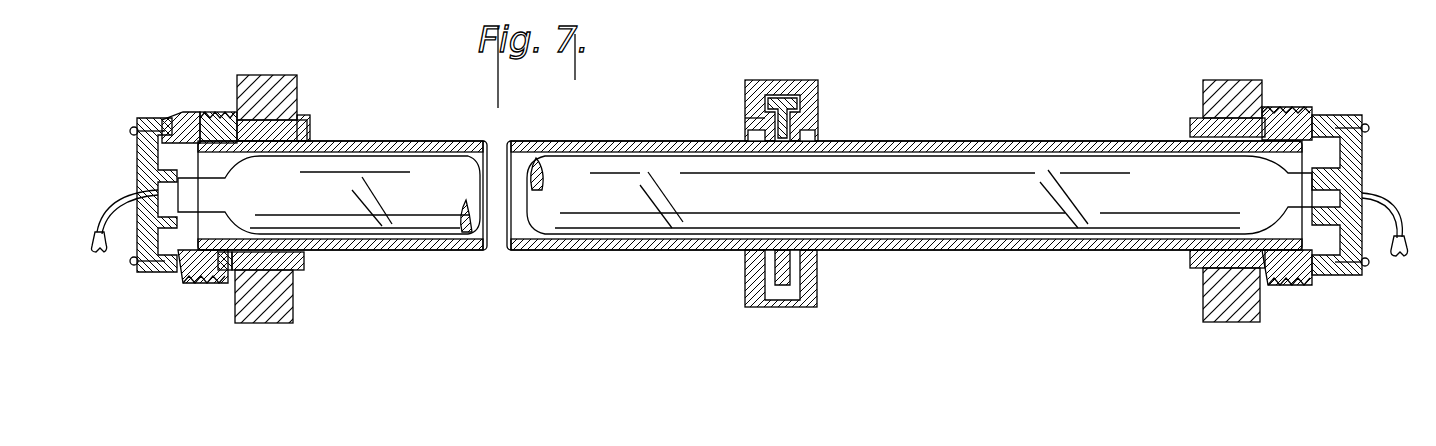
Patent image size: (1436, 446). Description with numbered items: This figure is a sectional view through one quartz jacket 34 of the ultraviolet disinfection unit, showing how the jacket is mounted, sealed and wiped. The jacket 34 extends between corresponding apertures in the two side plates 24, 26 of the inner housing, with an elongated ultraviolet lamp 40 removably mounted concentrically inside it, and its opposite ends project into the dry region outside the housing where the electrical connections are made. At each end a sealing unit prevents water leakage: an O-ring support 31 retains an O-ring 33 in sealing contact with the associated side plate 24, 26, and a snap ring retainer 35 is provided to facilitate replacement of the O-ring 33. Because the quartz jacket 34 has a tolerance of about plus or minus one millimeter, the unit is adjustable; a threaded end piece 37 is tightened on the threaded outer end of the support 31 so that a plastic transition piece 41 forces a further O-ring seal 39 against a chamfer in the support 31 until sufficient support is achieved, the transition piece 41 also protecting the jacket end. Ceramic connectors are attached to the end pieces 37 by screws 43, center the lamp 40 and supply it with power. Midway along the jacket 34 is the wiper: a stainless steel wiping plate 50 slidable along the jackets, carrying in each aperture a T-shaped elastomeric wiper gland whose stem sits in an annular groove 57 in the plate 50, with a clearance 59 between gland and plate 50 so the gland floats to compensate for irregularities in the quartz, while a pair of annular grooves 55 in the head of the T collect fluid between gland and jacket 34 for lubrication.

The side plate 24 is at (1262, 84).
The side plate 26 is at (268, 78).
The O-ring support 31 is at (188, 112).
The O-ring 33 is at (295, 115).
The quartz jacket 34 is at (443, 141).
The snap ring retainer 35 is at (305, 120).
The threaded end piece 37 is at (179, 272).
The further O-ring seal 39 is at (225, 272).
The ultraviolet lamp 40 is at (1010, 170).
The plastic transition piece 41 is at (214, 128).
The screw 43 is at (135, 265).
The wiping plate 50 is at (786, 184).
The annular groove 55 is at (820, 133).
The annular groove 57 is at (820, 99).
The clearance 59 is at (748, 116).